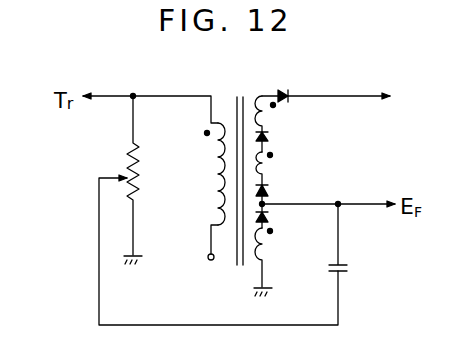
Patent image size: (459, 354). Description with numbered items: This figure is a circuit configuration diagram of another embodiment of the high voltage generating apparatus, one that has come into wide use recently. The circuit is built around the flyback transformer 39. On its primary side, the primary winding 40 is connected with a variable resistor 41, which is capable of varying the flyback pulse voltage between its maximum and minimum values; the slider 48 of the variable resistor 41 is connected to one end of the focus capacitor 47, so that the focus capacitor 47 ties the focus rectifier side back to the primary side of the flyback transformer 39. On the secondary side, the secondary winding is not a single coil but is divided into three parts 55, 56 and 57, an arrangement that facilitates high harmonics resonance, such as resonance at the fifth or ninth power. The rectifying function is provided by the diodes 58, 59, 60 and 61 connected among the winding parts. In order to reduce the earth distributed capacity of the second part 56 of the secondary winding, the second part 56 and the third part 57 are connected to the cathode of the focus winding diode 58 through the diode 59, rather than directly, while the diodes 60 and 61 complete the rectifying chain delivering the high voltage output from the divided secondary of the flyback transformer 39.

The flyback transformer 39 is at (252, 86).
The primary winding 40 is at (217, 165).
The variable resistor 41 is at (128, 170).
The focus capacitor 47 is at (346, 268).
The slider 48 is at (114, 185).
The first part of secondary winding 55 is at (267, 248).
The second part of secondary winding 56 is at (268, 162).
The third part of secondary winding 57 is at (266, 100).
The focus winding diode 58 is at (268, 217).
The diode 59 is at (268, 191).
The diode 60 is at (268, 137).
The diode 61 is at (287, 91).